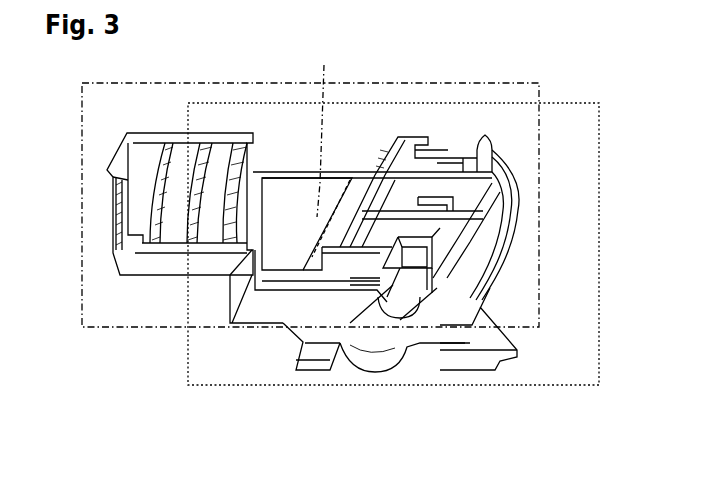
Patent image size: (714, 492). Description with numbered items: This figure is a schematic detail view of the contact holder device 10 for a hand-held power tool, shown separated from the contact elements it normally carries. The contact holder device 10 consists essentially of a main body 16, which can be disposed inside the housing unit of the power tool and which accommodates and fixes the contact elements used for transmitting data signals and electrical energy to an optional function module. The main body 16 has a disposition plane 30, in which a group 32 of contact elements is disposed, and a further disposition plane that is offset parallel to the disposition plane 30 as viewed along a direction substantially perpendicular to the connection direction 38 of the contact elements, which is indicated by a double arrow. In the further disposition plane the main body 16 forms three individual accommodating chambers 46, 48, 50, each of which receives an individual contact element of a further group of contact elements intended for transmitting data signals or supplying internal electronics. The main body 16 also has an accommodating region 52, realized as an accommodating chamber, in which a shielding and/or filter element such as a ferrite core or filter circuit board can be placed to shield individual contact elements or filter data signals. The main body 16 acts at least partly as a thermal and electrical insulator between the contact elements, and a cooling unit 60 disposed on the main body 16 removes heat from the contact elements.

The contact holder device 10 is at (150, 357).
The main body 16 is at (325, 130).
The disposition plane 30 is at (528, 386).
The group of contact elements 32 is at (540, 292).
The connection direction 38 is at (410, 416).
The individual accommodating chamber 46 is at (440, 150).
The individual accommodating chamber 48 is at (462, 197).
The individual accommodating chamber 50 is at (443, 238).
The accommodating region 52 is at (150, 194).
The cooling unit 60 is at (285, 170).